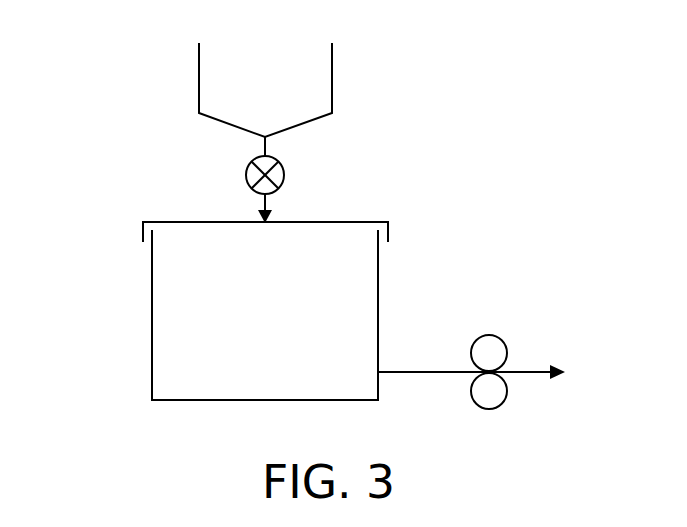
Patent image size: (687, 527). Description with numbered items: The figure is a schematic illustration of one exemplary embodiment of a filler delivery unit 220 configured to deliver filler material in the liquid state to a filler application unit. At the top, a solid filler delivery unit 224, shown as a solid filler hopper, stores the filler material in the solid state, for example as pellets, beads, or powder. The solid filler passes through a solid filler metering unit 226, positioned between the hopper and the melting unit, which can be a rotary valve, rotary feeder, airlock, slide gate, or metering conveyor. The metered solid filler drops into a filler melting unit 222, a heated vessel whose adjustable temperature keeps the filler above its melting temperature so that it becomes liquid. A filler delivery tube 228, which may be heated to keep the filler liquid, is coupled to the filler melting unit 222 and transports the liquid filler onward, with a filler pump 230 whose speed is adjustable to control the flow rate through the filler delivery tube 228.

The filler delivery unit 220 is at (516, 123).
The filler melting unit 222 is at (207, 311).
The solid filler delivery unit 224 is at (202, 99).
The solid filler metering unit 226 is at (203, 177).
The filler delivery tube 228 is at (508, 344).
The filler pump 230 is at (534, 341).